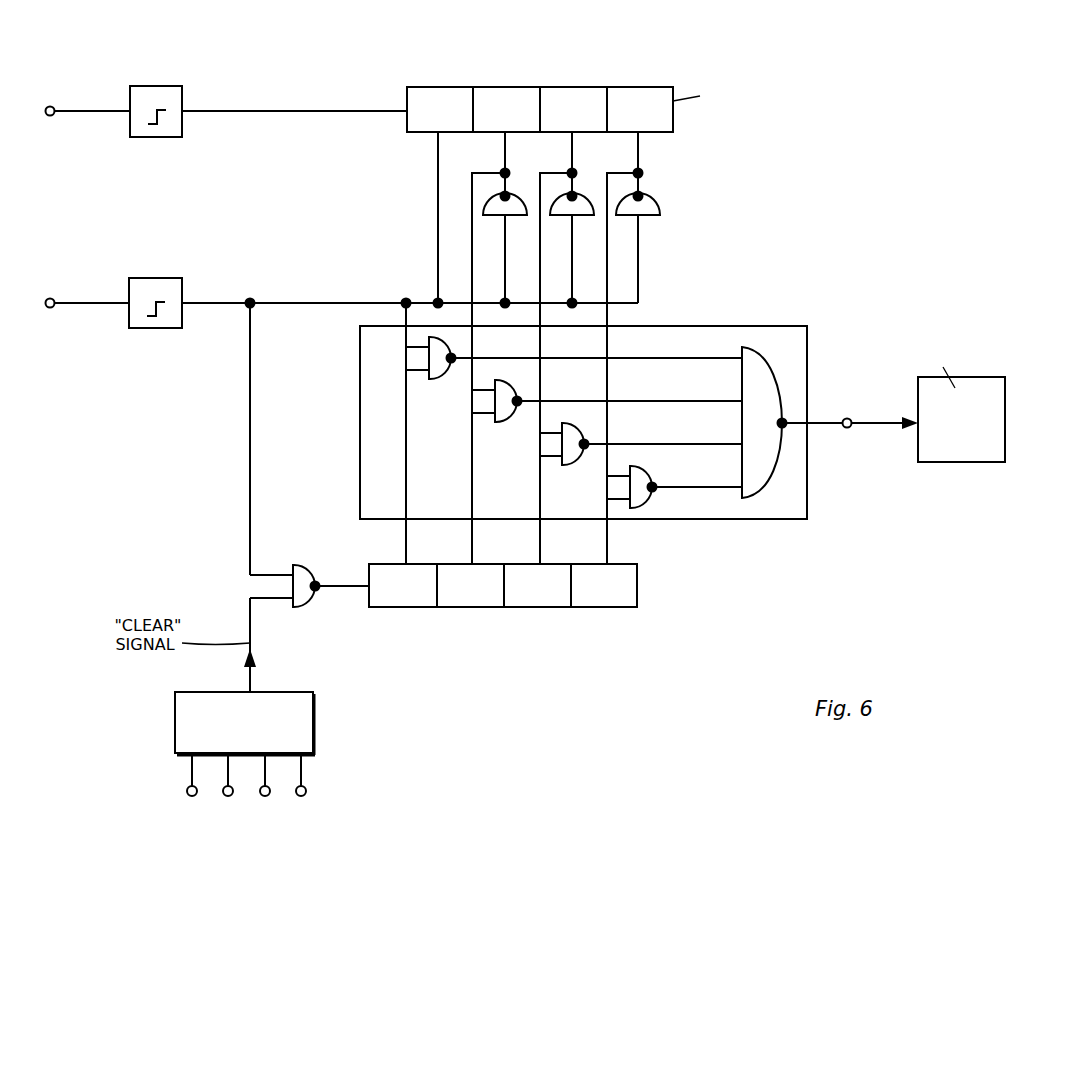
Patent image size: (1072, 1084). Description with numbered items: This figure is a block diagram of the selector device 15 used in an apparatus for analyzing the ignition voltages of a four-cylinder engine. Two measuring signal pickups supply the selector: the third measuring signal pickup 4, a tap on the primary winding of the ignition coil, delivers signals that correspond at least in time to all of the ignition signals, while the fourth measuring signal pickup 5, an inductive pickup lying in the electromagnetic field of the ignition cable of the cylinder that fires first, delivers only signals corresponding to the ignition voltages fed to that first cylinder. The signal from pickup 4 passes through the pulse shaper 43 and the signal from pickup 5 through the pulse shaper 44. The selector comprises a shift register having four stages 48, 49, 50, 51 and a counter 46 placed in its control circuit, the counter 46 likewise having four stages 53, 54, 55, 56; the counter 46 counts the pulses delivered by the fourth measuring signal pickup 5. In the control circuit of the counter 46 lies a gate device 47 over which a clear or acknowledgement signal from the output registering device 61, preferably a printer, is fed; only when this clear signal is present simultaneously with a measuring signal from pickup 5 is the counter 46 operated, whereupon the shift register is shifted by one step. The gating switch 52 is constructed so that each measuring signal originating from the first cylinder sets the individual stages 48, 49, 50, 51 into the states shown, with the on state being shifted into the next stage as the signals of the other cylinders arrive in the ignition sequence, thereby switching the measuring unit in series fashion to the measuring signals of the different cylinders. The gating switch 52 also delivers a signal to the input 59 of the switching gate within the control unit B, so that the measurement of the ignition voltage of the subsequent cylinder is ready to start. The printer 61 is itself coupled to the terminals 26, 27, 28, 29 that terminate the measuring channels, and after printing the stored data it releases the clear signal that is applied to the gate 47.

The third measuring signal pickup 4 is at (55, 106).
The fourth measuring signal pickup 5 is at (55, 298).
The pulse shaper 43 is at (167, 100).
The pulse shaper 44 is at (165, 294).
The channel 15 is at (644, 81).
The shift register stage 48 is at (446, 96).
The shift register stage 49 is at (506, 96).
The shift register stage 50 is at (573, 96).
The shift register stage 51 is at (639, 96).
The gating switch 52 is at (803, 510).
The input of the switching gate 59 is at (845, 418).
The control unit B is at (992, 447).
The counter 46 is at (551, 615).
The counter stage 53 is at (417, 597).
The counter stage 54 is at (475, 597).
The counter stage 55 is at (537, 597).
The counter stage 56 is at (600, 597).
The gate device 47 is at (309, 600).
The register (printer) 61 is at (313, 748).
The terminal 26 is at (192, 789).
The terminal 27 is at (228, 789).
The terminal 28 is at (265, 789).
The terminal 29 is at (301, 789).